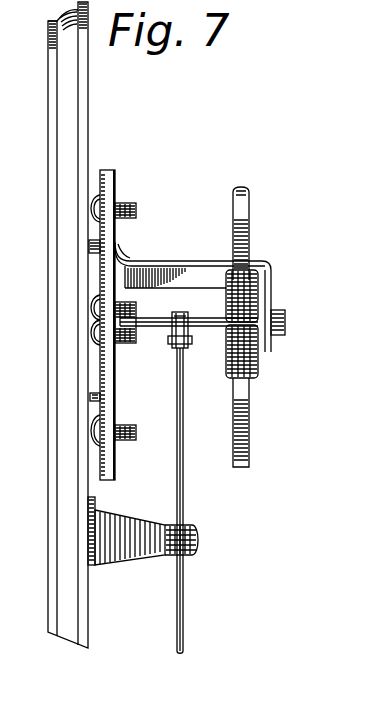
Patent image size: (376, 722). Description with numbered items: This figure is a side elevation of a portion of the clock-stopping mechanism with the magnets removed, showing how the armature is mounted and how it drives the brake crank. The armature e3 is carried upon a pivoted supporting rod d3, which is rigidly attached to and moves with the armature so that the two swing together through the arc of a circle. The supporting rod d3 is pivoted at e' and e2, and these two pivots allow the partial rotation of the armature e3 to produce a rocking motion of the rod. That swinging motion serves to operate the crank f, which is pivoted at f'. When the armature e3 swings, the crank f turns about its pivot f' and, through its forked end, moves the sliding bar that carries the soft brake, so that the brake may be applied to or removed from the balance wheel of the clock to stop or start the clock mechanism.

The armature e3 is at (250, 218).
The pivot e' is at (296, 310).
The pivot e2 is at (128, 344).
The supporting rod d3 is at (205, 326).
The pivot of crank f' is at (155, 531).
The crank f is at (195, 500).